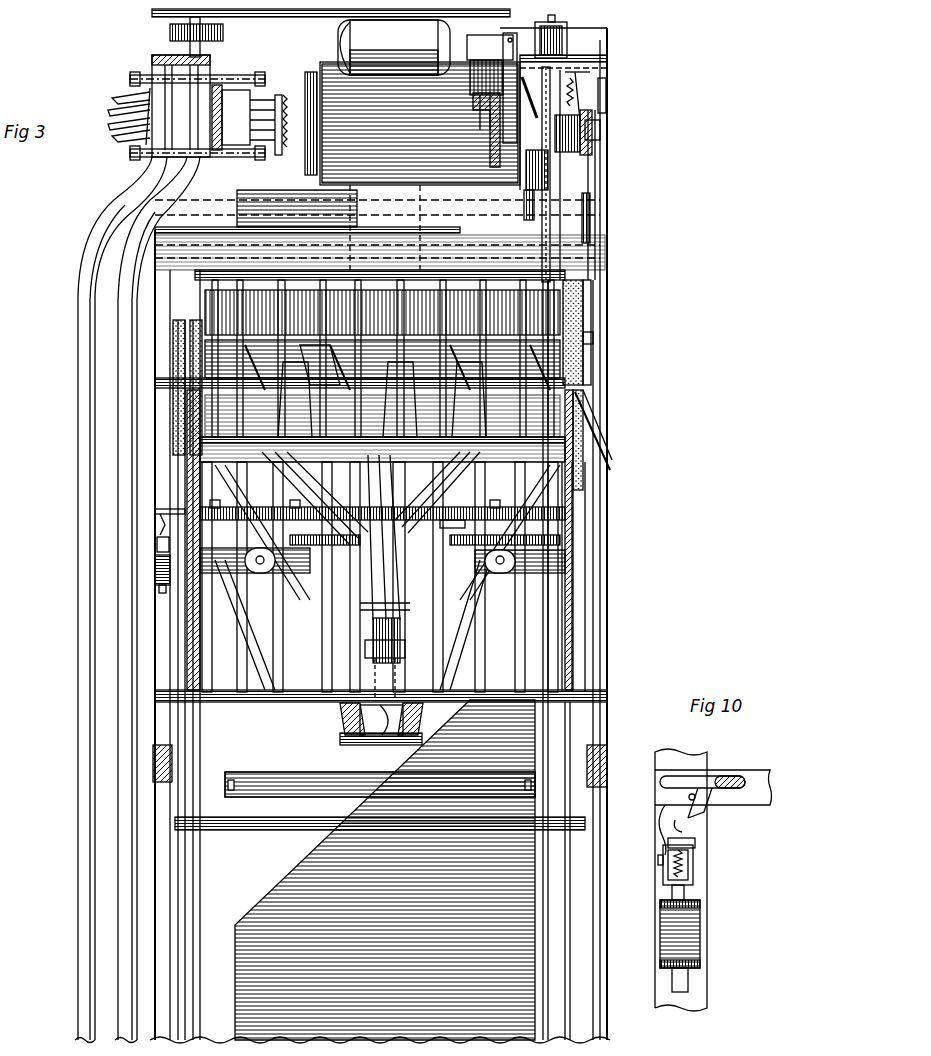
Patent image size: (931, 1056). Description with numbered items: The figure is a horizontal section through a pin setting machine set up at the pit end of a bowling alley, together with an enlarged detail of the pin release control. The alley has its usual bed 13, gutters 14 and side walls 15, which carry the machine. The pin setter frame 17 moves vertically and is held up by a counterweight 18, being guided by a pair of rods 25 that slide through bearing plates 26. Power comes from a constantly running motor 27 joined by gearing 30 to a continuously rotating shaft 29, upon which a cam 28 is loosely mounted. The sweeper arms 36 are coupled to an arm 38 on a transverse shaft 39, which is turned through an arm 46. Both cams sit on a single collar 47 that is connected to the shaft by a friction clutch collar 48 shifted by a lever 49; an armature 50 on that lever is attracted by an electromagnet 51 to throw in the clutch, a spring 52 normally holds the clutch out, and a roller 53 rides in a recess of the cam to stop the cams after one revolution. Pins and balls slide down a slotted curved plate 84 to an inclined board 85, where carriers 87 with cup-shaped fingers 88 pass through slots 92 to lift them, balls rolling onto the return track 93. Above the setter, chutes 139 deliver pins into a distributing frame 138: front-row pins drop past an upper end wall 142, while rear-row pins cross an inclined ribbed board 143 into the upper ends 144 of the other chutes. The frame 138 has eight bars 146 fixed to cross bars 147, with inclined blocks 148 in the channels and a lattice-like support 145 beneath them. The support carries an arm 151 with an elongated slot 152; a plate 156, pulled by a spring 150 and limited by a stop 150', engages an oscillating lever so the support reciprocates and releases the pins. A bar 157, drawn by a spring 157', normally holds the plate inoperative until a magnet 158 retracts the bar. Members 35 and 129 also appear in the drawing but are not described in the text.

In FIG. 3, the bed 13 is at (385, 870).
In FIG. 3, the gutters 14 is at (175, 912).
In FIG. 3, the side walls 15 is at (165, 1010).
In FIG. 3, the pin setter frame 17 is at (338, 712).
In FIG. 3, the counterweight 18 is at (333, 780).
In FIG. 3, the rods 25 is at (263, 574).
In FIG. 3, the bearing plates 26 is at (613, 560).
In FIG. 3, the motor 27 is at (394, 47).
In FIG. 3, the cam 28 is at (572, 96).
In FIG. 3, the shaft 29 is at (607, 140).
In FIG. 3, the gearing 30 is at (495, 68).
In FIG. 3, the lower cross beam 35 is at (260, 828).
In FIG. 3, the arms 36 is at (190, 740).
In FIG. 3, the arm 38 is at (585, 415).
In FIG. 3, the shaft 39 is at (593, 340).
In FIG. 3, the arm 46 is at (541, 205).
In FIG. 3, the collar 47 is at (540, 135).
In FIG. 3, the friction clutch collar 48 is at (598, 145).
In FIG. 3, the lever 49 is at (602, 88).
In FIG. 3, the armature 50 is at (560, 64).
In FIG. 3, the electromagnet 51 is at (560, 30).
In FIG. 3, the spring 52 is at (572, 74).
In FIG. 3, the roller 53 is at (545, 72).
In FIG. 3, the slotted transversely curved plate 84 is at (310, 92).
In FIG. 3, the inclined board 85 is at (231, 117).
In FIG. 3, the carriers 87 is at (135, 100).
In FIG. 3, the fingers 88 is at (118, 116).
In FIG. 3, the slots 92 is at (289, 140).
In FIG. 3, the return track 93 is at (120, 250).
In FIG. 3, the hopper bottom plate 129 is at (410, 748).
In FIG. 3, the distributing frame 138 is at (555, 672).
In FIG. 3, the chutes 139 is at (380, 590).
In FIG. 3, the upper end wall 142 is at (295, 360).
In FIG. 3, the inclined ribbed board 143 is at (540, 425).
In FIG. 3, the upper ends 144 is at (490, 275).
In FIG. 3, the lattice-like support 145 is at (455, 527).
In FIG. 3, the bars 146 is at (283, 668).
In FIG. 3, the cross bars 147 is at (320, 702).
In FIG. 3, the inclined blocks 148 is at (385, 655).
In FIG. 10, the spring 150 is at (650, 830).
In FIG. 10, the stop 150' is at (667, 803).
In FIG. 3, the arm 151 is at (382, 504).
In FIG. 10, the arm 151 is at (713, 788).
In FIG. 3, the elongated slot 152 is at (158, 510).
In FIG. 10, the elongated slot 152 is at (708, 782).
In FIG. 3, the plate 156 is at (160, 522).
In FIG. 10, the plate 156 is at (700, 838).
In FIG. 3, the bar 157 is at (92, 542).
In FIG. 10, the bar 157 is at (716, 865).
In FIG. 10, the spring 157' is at (725, 887).
In FIG. 3, the magnet 158 is at (152, 568).
In FIG. 10, the magnet 158 is at (700, 926).